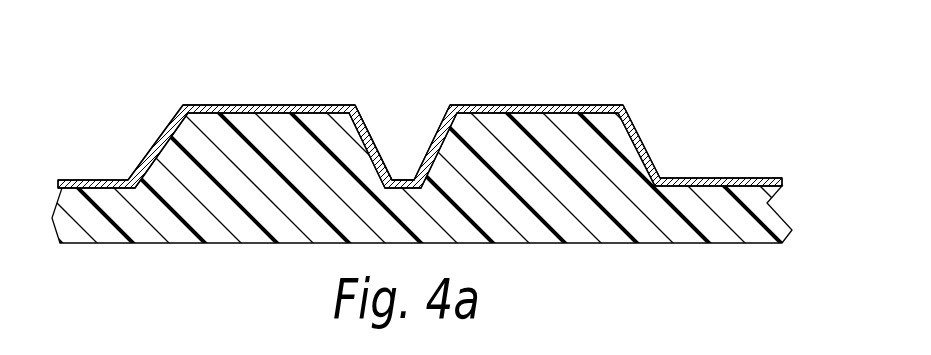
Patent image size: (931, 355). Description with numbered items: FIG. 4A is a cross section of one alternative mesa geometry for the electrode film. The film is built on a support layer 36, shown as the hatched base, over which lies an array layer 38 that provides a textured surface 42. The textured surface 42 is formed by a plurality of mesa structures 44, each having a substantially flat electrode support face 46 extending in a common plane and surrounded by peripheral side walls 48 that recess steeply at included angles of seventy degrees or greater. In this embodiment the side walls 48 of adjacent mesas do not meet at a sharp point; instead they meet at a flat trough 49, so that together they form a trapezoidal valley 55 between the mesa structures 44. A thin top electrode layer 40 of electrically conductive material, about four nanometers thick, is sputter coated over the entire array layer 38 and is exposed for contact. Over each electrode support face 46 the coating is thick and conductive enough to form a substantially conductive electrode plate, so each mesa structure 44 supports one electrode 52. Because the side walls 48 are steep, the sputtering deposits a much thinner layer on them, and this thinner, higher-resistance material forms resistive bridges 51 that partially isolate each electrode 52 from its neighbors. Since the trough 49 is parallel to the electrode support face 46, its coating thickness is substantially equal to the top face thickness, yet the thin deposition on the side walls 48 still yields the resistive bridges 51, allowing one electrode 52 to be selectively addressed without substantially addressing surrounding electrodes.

The support layer 36 is at (757, 225).
The array layer 38 is at (746, 158).
The top electrode layer 40 is at (543, 105).
The textured surface 42 is at (108, 131).
The mesa structure 44 is at (620, 170).
The electrode support face 46 is at (210, 107).
The peripheral side wall 48 is at (143, 160).
The trough 49 is at (400, 178).
The resistive bridge 51 is at (457, 63).
The electrode 52 is at (278, 105).
The trapezoidal valley 55 is at (381, 106).